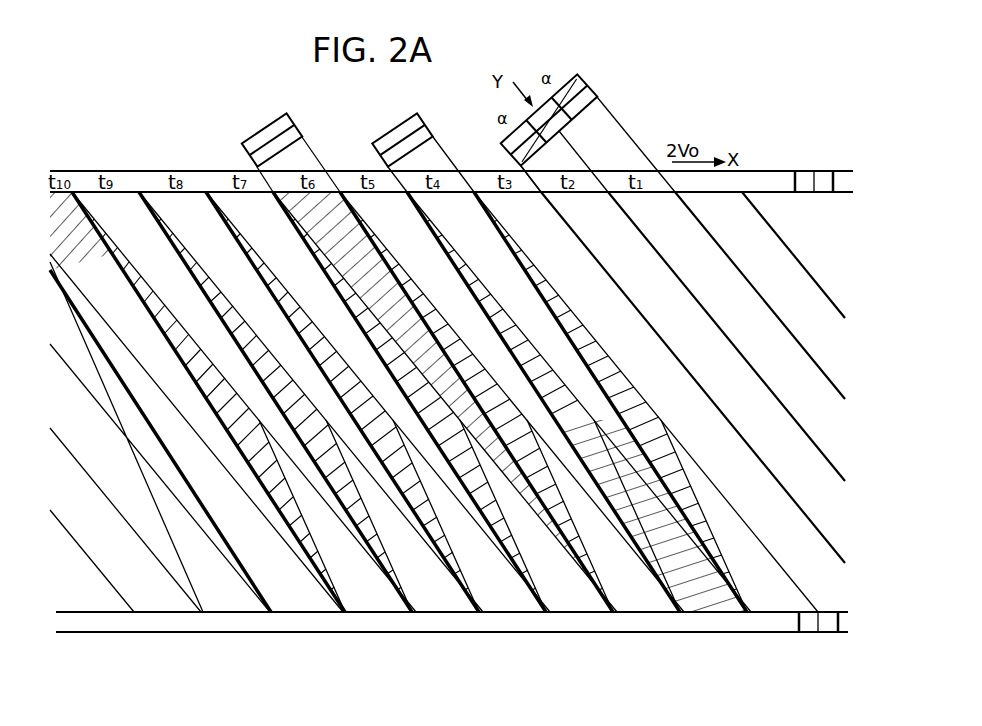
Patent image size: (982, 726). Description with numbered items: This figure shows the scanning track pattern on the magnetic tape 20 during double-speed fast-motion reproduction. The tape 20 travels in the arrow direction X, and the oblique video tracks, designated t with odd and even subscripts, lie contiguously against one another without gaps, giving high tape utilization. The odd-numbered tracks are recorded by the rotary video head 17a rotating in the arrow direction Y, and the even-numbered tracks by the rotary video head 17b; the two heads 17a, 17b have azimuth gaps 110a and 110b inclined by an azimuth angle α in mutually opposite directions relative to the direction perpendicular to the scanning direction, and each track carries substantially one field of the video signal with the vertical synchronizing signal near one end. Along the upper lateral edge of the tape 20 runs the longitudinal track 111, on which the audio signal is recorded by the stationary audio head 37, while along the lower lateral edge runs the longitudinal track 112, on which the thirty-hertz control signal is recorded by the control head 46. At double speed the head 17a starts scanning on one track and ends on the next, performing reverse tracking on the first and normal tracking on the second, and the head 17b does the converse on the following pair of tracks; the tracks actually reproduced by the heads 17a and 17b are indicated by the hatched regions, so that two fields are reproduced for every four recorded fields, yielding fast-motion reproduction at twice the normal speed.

The rotary video head 17a is at (386, 142).
The rotary video head 17b is at (253, 141).
The azimuth gap 110a is at (598, 96).
The azimuth gap 110b is at (514, 163).
The audio track 111 is at (757, 170).
The magnetic tape 20 is at (780, 170).
The stationary audio head 37 is at (828, 170).
The control track 112 is at (658, 634).
The control head 46 is at (820, 634).